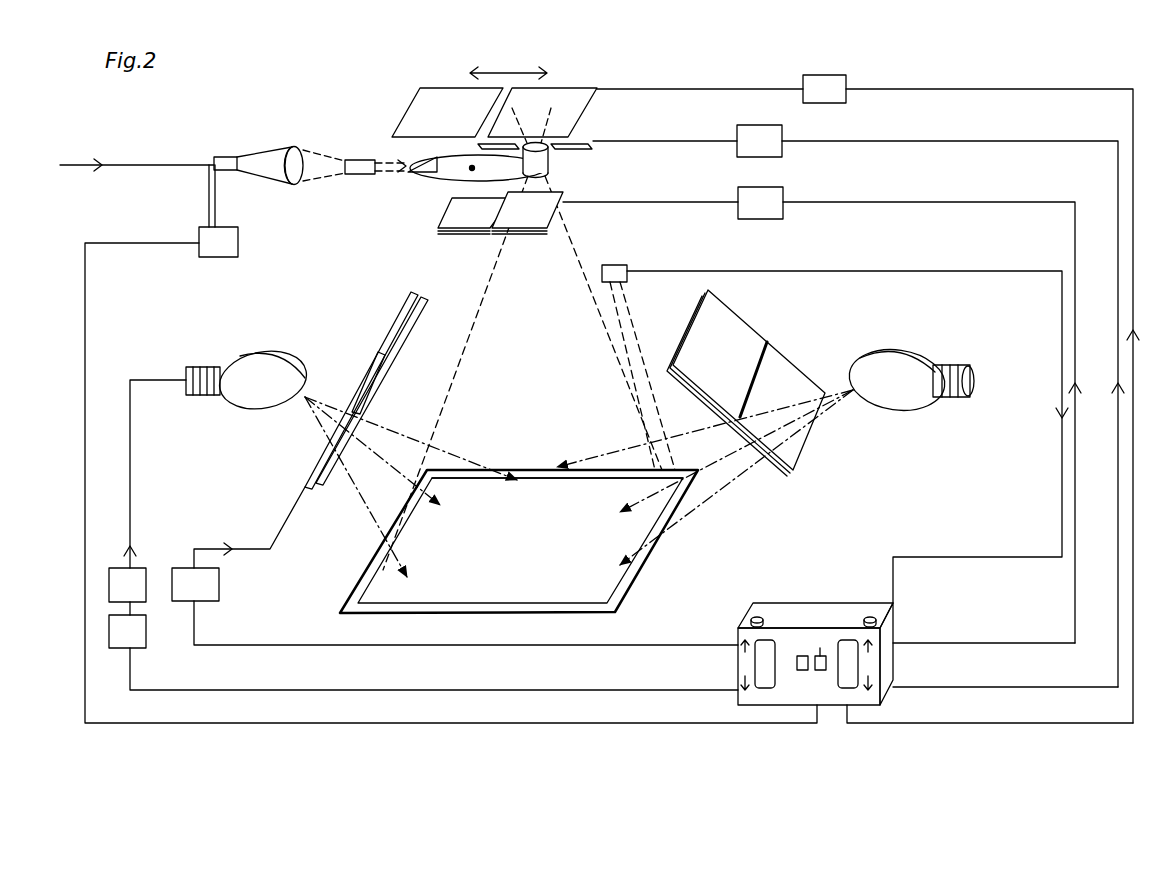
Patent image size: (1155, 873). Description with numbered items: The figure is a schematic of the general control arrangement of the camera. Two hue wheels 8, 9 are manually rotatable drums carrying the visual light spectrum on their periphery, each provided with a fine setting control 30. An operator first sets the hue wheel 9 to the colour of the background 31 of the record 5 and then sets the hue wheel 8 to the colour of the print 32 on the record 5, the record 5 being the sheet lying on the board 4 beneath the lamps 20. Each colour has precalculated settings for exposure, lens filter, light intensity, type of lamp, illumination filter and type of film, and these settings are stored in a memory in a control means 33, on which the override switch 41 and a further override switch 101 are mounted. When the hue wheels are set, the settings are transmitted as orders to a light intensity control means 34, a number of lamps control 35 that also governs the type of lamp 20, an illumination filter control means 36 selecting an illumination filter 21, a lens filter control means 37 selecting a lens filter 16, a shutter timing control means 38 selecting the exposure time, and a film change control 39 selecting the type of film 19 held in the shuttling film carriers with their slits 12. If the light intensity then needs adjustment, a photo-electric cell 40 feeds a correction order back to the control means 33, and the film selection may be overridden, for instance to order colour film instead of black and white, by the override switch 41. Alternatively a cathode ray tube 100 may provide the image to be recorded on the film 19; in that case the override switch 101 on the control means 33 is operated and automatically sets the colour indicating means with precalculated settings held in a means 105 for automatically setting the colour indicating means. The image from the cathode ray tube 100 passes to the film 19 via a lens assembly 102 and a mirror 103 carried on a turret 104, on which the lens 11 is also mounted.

The display board frame 4 is at (627, 598).
The record 5 is at (400, 615).
The hue wheel 8 is at (755, 690).
The hue wheel 9 is at (860, 685).
The lens 11 is at (549, 165).
The aperture slits 12 is at (590, 150).
The filter 16 is at (563, 203).
The film 19 is at (420, 106).
The lamps 20 is at (250, 352).
The filter 21 is at (395, 335).
The fine setting control 30 is at (757, 618).
The background 31 is at (522, 595).
The print 32 is at (440, 556).
The control means 33 is at (840, 603).
The light intensity control means 34 is at (146, 640).
The number of lamps control 35 is at (146, 575).
The illumination filter control means 36 is at (219, 585).
The lens filter control means 37 is at (738, 190).
The shutter timing control means 38 is at (740, 125).
The film change control 39 is at (815, 75).
The photo-electric cell 40 is at (612, 265).
The override switch 41 is at (802, 656).
The cathode ray tube 100 is at (262, 157).
The override switch 101 is at (825, 672).
The lens assembly 102 is at (350, 175).
The mirror 103 is at (412, 173).
The turret 104 is at (440, 178).
The means for automatically setting the colour indicating means 105 is at (238, 245).